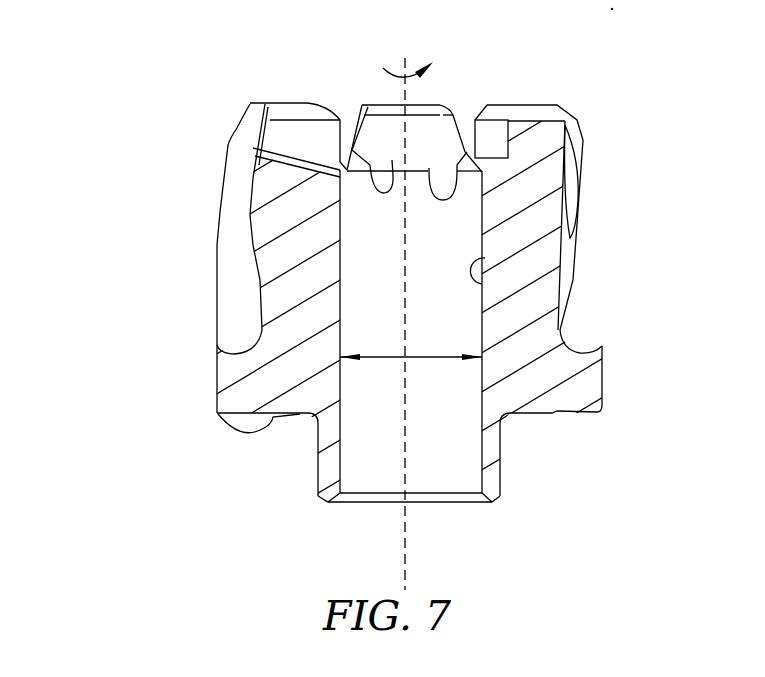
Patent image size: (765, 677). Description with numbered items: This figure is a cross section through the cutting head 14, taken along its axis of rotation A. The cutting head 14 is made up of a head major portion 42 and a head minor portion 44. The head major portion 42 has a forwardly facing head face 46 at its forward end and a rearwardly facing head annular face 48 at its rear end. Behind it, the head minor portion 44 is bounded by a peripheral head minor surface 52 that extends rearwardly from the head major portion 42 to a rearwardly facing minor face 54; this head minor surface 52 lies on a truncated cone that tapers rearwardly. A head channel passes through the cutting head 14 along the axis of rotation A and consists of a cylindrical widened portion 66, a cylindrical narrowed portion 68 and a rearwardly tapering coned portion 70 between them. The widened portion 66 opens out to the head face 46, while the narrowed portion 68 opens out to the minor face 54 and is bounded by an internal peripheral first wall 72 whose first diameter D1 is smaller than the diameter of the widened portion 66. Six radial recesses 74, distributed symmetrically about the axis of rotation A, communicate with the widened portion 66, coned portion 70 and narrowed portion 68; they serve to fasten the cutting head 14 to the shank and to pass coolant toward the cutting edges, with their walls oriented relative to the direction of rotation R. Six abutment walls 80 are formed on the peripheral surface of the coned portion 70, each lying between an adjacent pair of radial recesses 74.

The cutting head 14 is at (112, 107).
The head major portion 42 is at (180, 291).
The head minor portion 44 is at (180, 474).
The head face 46 is at (250, 96).
The head annular face 48 is at (218, 414).
The head minor surface 52 is at (500, 452).
The minor face 54 is at (323, 503).
The widened portion 66 is at (533, 137).
The narrowed portion 68 is at (463, 318).
The coned portion 70 is at (522, 165).
The first wall 72 is at (485, 258).
The radial recess 74 is at (345, 108).
The abutment wall 80 is at (330, 160).
The axis of rotation A is at (407, 521).
The direction of rotation R is at (410, 53).
The first diameter D1 is at (411, 344).